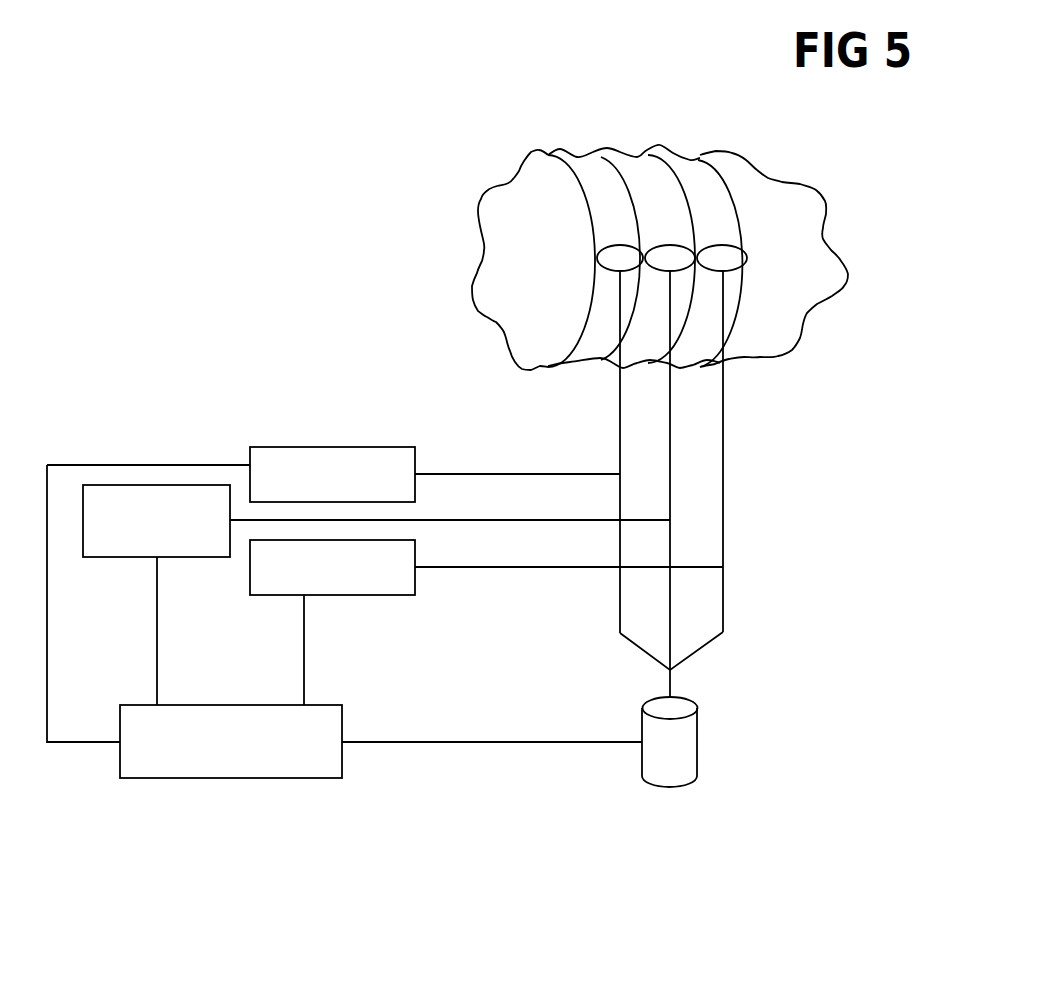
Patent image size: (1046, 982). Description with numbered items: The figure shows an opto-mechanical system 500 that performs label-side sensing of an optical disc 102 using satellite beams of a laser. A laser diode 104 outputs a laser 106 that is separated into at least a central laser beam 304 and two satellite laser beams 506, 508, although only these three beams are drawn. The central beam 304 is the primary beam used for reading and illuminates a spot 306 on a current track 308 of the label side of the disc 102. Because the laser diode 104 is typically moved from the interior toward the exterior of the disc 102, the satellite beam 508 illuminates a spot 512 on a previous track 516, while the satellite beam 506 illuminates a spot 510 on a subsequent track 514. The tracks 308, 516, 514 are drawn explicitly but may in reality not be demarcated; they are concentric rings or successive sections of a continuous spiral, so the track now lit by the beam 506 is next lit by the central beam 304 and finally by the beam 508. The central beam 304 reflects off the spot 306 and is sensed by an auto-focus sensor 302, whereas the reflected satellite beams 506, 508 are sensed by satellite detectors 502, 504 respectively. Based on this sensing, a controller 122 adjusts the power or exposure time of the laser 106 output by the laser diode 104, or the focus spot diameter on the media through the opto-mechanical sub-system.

The opto-mechanical system 500 is at (110, 300).
The optical disc 102 is at (773, 236).
The previous track 516 is at (588, 177).
The current track 308 is at (647, 173).
The subsequent track 514 is at (688, 175).
The spot 512 is at (612, 258).
The spot 306 is at (663, 258).
The spot 510 is at (714, 258).
The satellite laser beam 508 is at (620, 425).
The central laser beam 304 is at (670, 435).
The satellite laser beam 506 is at (723, 505).
The satellite detector 504 is at (283, 447).
The auto-focus sensor 302 is at (146, 557).
The satellite detector 502 is at (335, 595).
The controller 122 is at (230, 778).
The laser 106 is at (670, 672).
The laser diode 104 is at (697, 770).